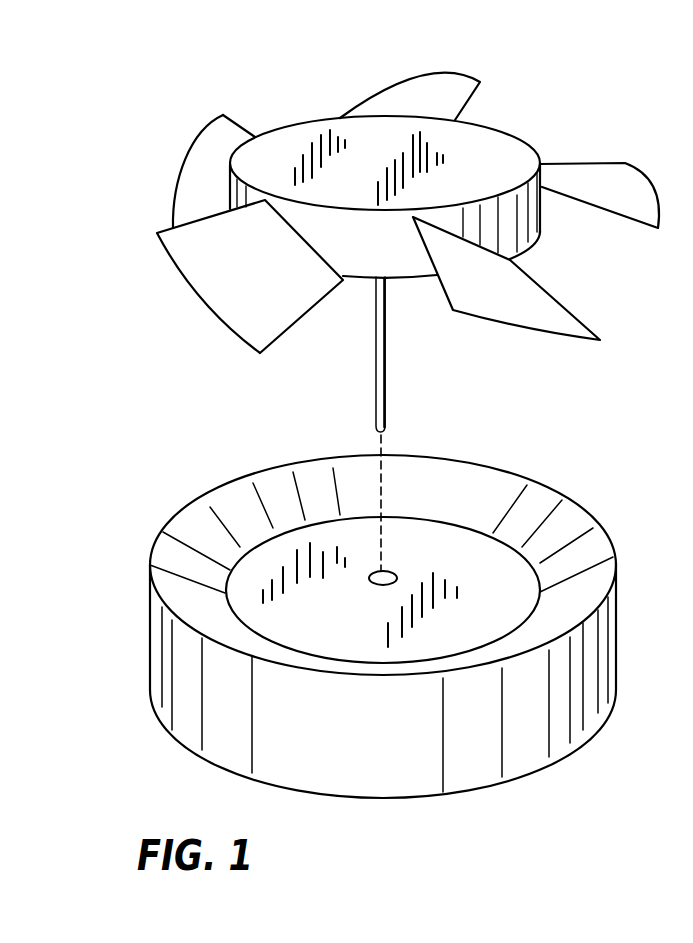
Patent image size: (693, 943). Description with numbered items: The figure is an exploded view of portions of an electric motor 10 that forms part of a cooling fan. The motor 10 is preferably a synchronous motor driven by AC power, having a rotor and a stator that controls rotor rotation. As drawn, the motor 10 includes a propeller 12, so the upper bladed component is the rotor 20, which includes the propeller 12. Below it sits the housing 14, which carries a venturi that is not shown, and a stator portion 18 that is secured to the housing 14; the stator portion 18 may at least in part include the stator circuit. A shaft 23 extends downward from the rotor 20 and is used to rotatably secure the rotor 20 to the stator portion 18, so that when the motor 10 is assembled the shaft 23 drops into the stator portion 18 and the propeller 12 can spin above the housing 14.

The motor 10 is at (166, 382).
The propeller 12 is at (366, 92).
The housing 14 is at (150, 661).
The stator portion 18 is at (587, 475).
The rotor 20 is at (588, 356).
The shaft 23 is at (388, 403).